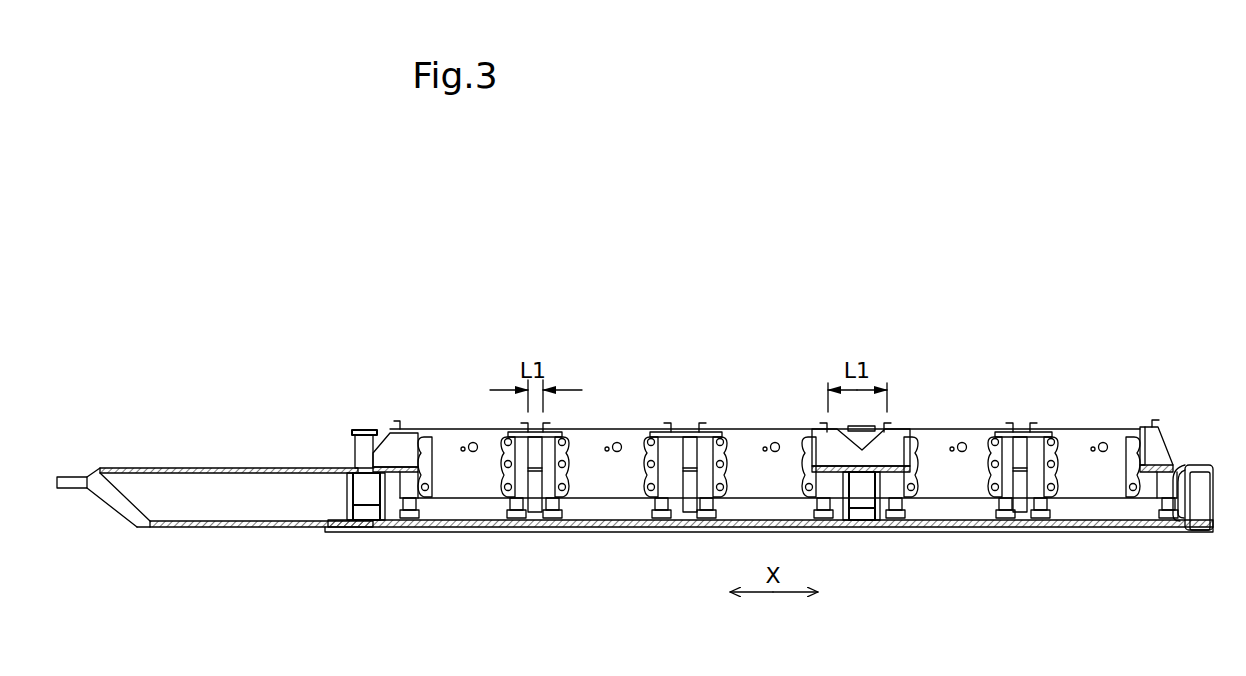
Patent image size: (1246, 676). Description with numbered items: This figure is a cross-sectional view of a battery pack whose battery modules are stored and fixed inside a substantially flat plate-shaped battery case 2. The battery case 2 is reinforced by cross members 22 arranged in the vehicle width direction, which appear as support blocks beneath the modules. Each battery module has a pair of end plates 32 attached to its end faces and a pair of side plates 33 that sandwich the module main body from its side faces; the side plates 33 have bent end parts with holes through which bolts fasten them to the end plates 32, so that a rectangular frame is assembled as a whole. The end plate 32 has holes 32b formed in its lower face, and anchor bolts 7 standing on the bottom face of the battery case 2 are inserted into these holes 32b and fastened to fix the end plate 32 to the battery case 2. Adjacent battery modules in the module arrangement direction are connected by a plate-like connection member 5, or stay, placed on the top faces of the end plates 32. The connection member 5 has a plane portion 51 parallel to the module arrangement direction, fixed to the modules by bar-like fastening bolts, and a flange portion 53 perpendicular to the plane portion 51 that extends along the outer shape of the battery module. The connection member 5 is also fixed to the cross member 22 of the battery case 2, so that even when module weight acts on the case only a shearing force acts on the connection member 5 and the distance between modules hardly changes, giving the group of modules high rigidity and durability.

The battery case 2 is at (228, 448).
The connection member 5 is at (557, 420).
The anchor bolt 7 is at (400, 525).
The cross member 22 is at (349, 500).
The end plate 32 is at (443, 425).
The hole 32b is at (417, 508).
The side plate 33 is at (1055, 452).
The plane portion 51 is at (515, 430).
The flange portion 53 is at (812, 448).